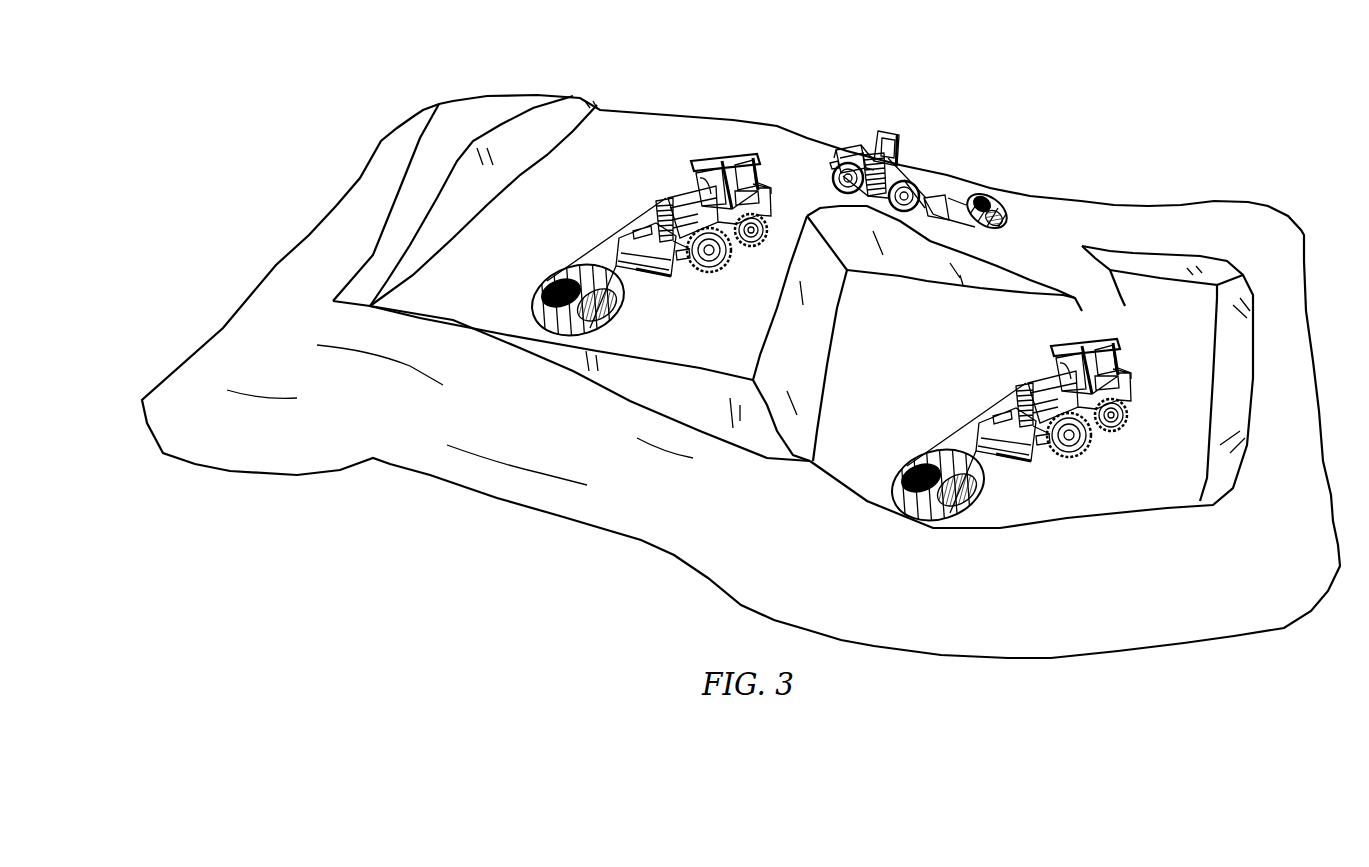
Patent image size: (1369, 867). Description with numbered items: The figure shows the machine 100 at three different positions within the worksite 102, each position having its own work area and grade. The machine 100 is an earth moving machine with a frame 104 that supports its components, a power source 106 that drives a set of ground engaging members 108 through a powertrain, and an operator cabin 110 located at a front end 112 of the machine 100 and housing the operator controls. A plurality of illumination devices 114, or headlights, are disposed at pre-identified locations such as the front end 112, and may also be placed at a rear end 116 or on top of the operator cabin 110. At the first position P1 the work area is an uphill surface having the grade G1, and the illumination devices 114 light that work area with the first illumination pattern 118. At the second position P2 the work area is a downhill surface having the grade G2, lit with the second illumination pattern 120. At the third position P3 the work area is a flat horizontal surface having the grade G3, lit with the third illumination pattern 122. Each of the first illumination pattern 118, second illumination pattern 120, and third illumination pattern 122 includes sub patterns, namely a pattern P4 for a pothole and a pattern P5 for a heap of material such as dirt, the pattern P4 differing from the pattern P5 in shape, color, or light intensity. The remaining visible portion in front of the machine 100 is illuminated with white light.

The machine 100 is at (691, 153).
The worksite 102 is at (292, 85).
The frame 104 is at (668, 198).
The power source 106 is at (772, 205).
The set of ground engaging members 108 is at (707, 276).
The operator cabin 110 is at (740, 153).
The front end 112 is at (646, 215).
The plurality of illumination devices 114 is at (656, 200).
The rear end 116 is at (760, 167).
The first illumination pattern 118 is at (548, 302).
The second illumination pattern 120 is at (1000, 200).
The third illumination pattern 122 is at (908, 485).
The first position P1 is at (716, 148).
The second position P2 is at (917, 161).
The third position P3 is at (1128, 336).
The pattern for a pothole P4 is at (572, 290).
The pattern for a heap of material P5 is at (622, 312).
The grade corresponding to the uphill surface G1 is at (706, 364).
The grade corresponding to the downhill surface G2 is at (981, 255).
The grade corresponding to the flat horizontal surface G3 is at (1100, 489).